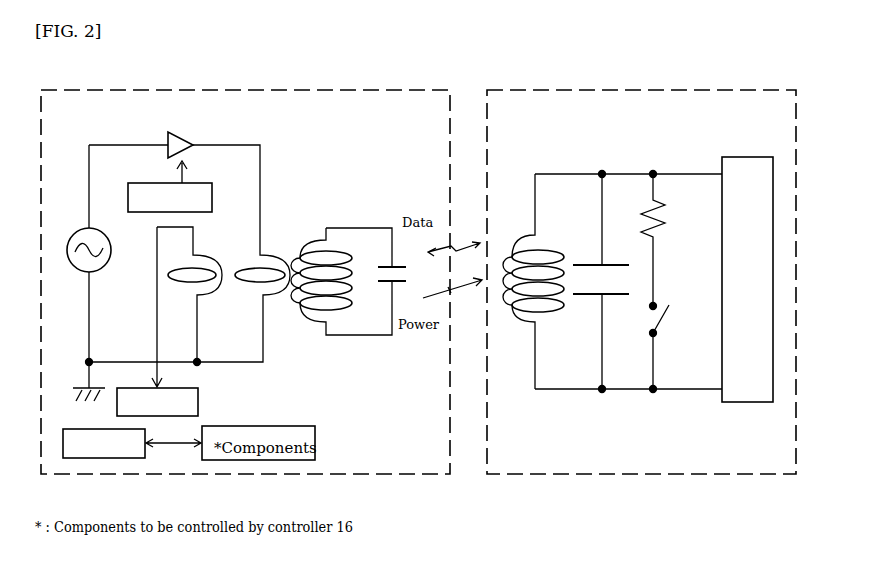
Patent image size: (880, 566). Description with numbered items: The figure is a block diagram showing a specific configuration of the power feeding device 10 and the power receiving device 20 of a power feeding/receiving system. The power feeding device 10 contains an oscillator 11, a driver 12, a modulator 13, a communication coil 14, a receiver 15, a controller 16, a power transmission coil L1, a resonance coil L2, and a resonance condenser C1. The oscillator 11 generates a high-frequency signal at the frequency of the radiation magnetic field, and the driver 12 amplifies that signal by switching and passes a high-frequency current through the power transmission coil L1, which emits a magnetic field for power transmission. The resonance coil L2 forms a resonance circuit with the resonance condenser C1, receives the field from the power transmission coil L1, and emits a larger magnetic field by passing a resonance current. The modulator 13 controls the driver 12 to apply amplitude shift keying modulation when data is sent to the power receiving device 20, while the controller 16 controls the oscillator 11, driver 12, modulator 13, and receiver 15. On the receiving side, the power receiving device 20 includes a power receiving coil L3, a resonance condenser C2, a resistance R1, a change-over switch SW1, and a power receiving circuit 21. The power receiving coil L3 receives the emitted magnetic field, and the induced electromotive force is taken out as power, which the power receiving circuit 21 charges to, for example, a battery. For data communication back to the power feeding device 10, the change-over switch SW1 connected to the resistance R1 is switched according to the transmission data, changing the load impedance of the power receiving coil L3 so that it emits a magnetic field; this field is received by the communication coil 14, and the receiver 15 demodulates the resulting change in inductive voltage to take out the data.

The power feeding device 10 is at (405, 90).
The oscillator 11 is at (82, 233).
The driver 12 is at (178, 131).
The modulator 13 is at (199, 183).
The communication coil 14 is at (205, 297).
The receiver 15 is at (199, 396).
The controller 16 is at (148, 456).
The power receiving device 20 is at (769, 90).
The power receiving circuit 21 is at (746, 157).
The power transmission coil L1 is at (258, 263).
The resonance coil L2 is at (340, 280).
The resonance condenser C1 is at (384, 263).
The power receiving coil L3 is at (533, 281).
The resonance condenser C2 is at (605, 281).
The resistance R1 is at (668, 240).
The change-over switch SW1 is at (679, 346).